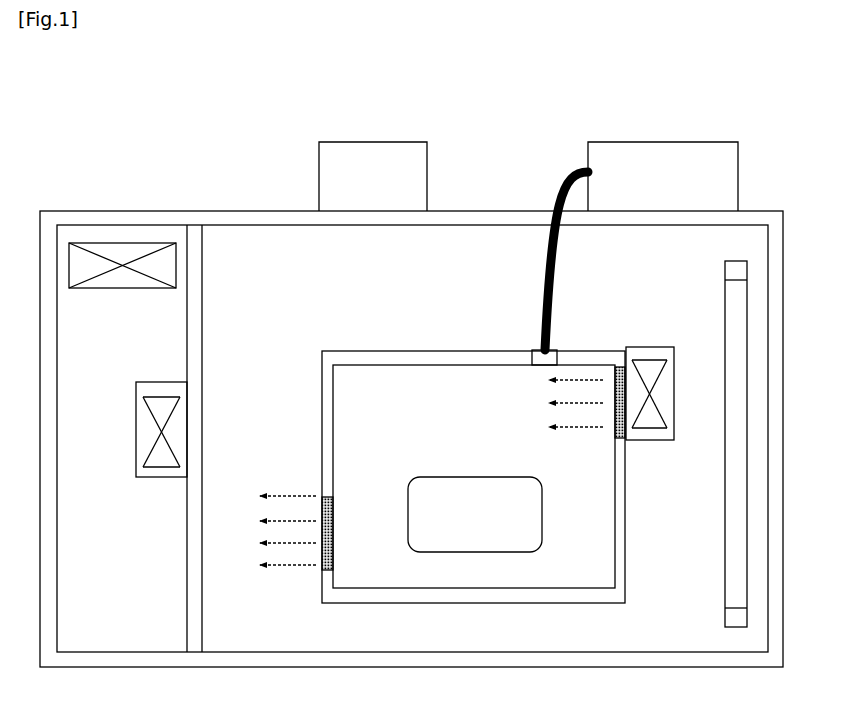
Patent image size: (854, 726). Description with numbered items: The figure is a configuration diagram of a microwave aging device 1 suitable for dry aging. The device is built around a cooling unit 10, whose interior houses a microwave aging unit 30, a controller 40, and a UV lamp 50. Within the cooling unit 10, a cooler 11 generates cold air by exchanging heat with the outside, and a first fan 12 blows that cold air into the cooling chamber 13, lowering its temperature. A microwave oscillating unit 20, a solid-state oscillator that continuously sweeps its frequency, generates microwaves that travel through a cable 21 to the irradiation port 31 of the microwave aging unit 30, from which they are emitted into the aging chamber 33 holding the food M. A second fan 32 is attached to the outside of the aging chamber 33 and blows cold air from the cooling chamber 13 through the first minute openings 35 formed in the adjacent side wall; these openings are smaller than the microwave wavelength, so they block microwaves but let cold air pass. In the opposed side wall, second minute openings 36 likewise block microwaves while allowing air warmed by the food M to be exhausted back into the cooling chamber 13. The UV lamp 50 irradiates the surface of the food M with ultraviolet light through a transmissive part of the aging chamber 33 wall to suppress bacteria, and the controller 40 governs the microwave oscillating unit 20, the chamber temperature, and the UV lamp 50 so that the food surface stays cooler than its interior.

The microwave aging device 1 is at (493, 158).
The cooling unit 10 is at (262, 212).
The cooler 11 is at (107, 257).
The first fan 12 is at (158, 381).
The cooling chamber 13 is at (229, 245).
The microwave oscillating unit 20 is at (663, 142).
The cable 21 is at (560, 197).
The microwave aging unit 30 is at (431, 338).
The irradiation port 31 is at (537, 352).
The second fan 32 is at (640, 348).
The aging chamber 33 is at (377, 386).
The first minute openings 35 is at (621, 436).
The second minute openings 36 is at (320, 497).
The controller 40 is at (368, 142).
The UV lamp 50 is at (737, 352).
The food M is at (473, 494).